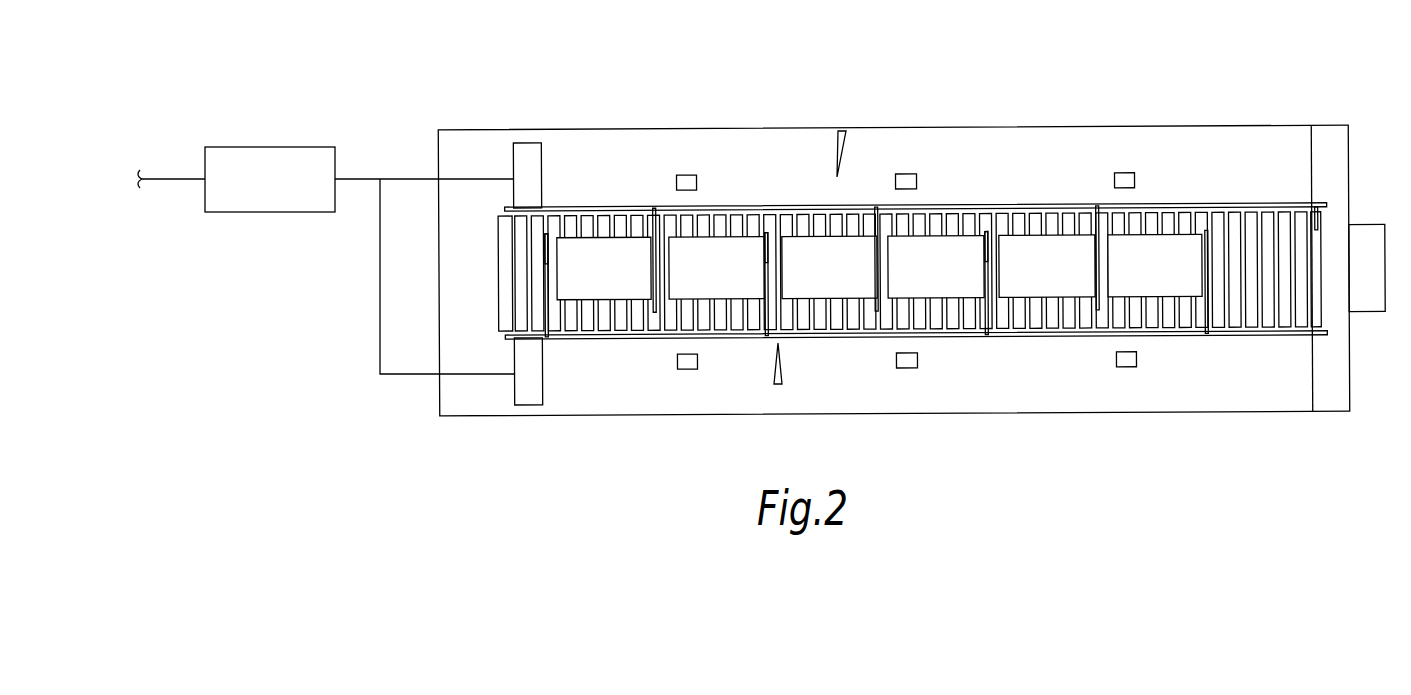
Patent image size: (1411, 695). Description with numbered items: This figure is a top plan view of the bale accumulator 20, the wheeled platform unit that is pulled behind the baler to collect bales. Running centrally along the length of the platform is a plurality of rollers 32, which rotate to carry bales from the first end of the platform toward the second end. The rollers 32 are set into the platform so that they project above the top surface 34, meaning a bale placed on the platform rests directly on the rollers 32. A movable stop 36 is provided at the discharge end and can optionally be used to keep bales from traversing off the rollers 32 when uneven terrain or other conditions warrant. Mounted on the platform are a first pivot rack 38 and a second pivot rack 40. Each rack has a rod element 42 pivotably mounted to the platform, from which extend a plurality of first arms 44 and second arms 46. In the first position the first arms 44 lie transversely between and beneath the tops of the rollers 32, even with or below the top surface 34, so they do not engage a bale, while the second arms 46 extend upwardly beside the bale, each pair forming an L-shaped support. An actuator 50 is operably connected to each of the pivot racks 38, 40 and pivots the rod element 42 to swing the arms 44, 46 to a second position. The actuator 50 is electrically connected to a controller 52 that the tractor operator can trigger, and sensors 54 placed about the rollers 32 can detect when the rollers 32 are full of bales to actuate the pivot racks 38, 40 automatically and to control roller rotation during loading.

The bale accumulator 20 is at (1062, 72).
The rollers 32 is at (1267, 311).
The top surface 34 is at (727, 144).
The stop 36 is at (1322, 220).
The first pivot rack 38 is at (838, 131).
The second pivot rack 40 is at (776, 384).
The rod element 42 is at (603, 339).
The first arms 44 is at (548, 251).
The second arms 46 is at (545, 339).
The actuator 50 is at (528, 143).
The controller 52 is at (254, 147).
The sensors 54 is at (684, 175).